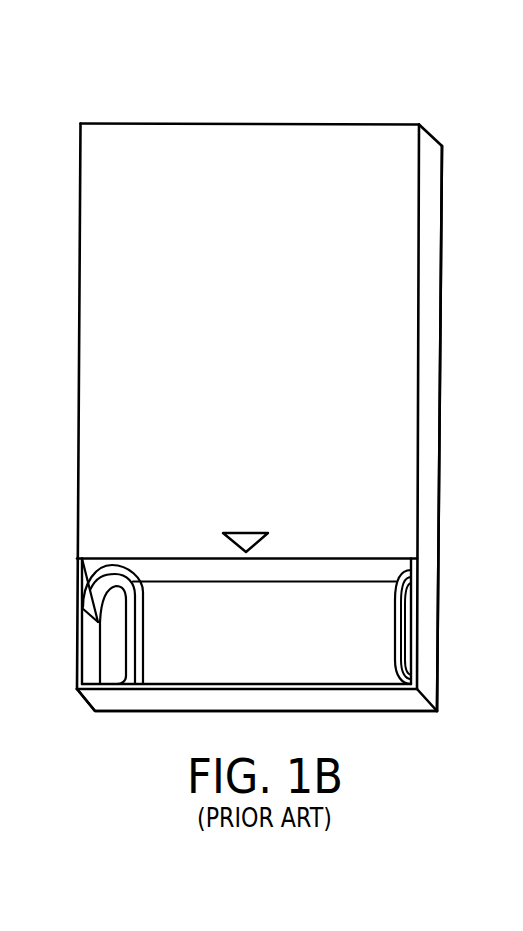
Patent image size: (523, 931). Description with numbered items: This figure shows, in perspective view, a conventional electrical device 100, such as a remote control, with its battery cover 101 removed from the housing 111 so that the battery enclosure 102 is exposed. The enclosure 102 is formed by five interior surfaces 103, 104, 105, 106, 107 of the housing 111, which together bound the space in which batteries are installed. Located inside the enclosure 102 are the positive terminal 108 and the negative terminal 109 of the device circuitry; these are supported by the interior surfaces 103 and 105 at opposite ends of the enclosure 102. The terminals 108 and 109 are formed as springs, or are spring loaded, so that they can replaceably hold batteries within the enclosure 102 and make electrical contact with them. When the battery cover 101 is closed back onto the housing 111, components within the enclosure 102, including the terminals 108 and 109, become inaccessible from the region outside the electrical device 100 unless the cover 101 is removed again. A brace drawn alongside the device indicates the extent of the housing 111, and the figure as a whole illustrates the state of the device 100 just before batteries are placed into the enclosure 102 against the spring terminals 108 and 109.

The electrical device 100 is at (221, 95).
The battery cover 101 is at (522, 571).
The enclosure 102 is at (201, 666).
The interior surface 103 is at (90, 645).
The interior surface 104 is at (203, 570).
The interior surface 105 is at (407, 632).
The interior surface 106 is at (222, 683).
The interior surface 107 is at (326, 648).
The positive terminal 108 is at (395, 620).
The negative terminal 109 is at (138, 648).
The housing 111 is at (452, 120).